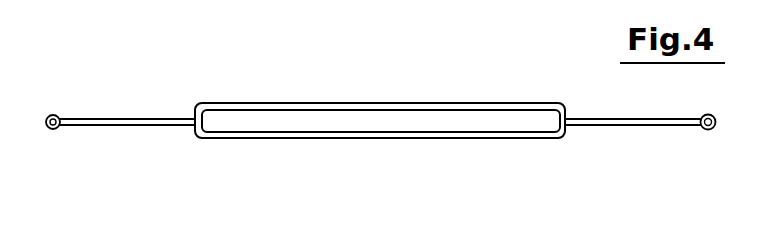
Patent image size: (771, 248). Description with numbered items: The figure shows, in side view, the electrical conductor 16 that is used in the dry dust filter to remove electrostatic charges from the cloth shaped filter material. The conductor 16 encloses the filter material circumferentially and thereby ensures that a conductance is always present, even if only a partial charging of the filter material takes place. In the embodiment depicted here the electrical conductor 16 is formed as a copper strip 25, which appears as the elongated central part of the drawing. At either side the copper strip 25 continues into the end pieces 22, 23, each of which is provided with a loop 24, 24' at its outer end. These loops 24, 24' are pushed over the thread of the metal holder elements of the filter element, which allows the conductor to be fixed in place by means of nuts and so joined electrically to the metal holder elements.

The electrical conductor 16 is at (433, 133).
The end piece 22 is at (645, 126).
The end piece 23 is at (113, 126).
The loop 24 is at (726, 169).
The loop 24' is at (69, 77).
The copper strip 25 is at (360, 103).